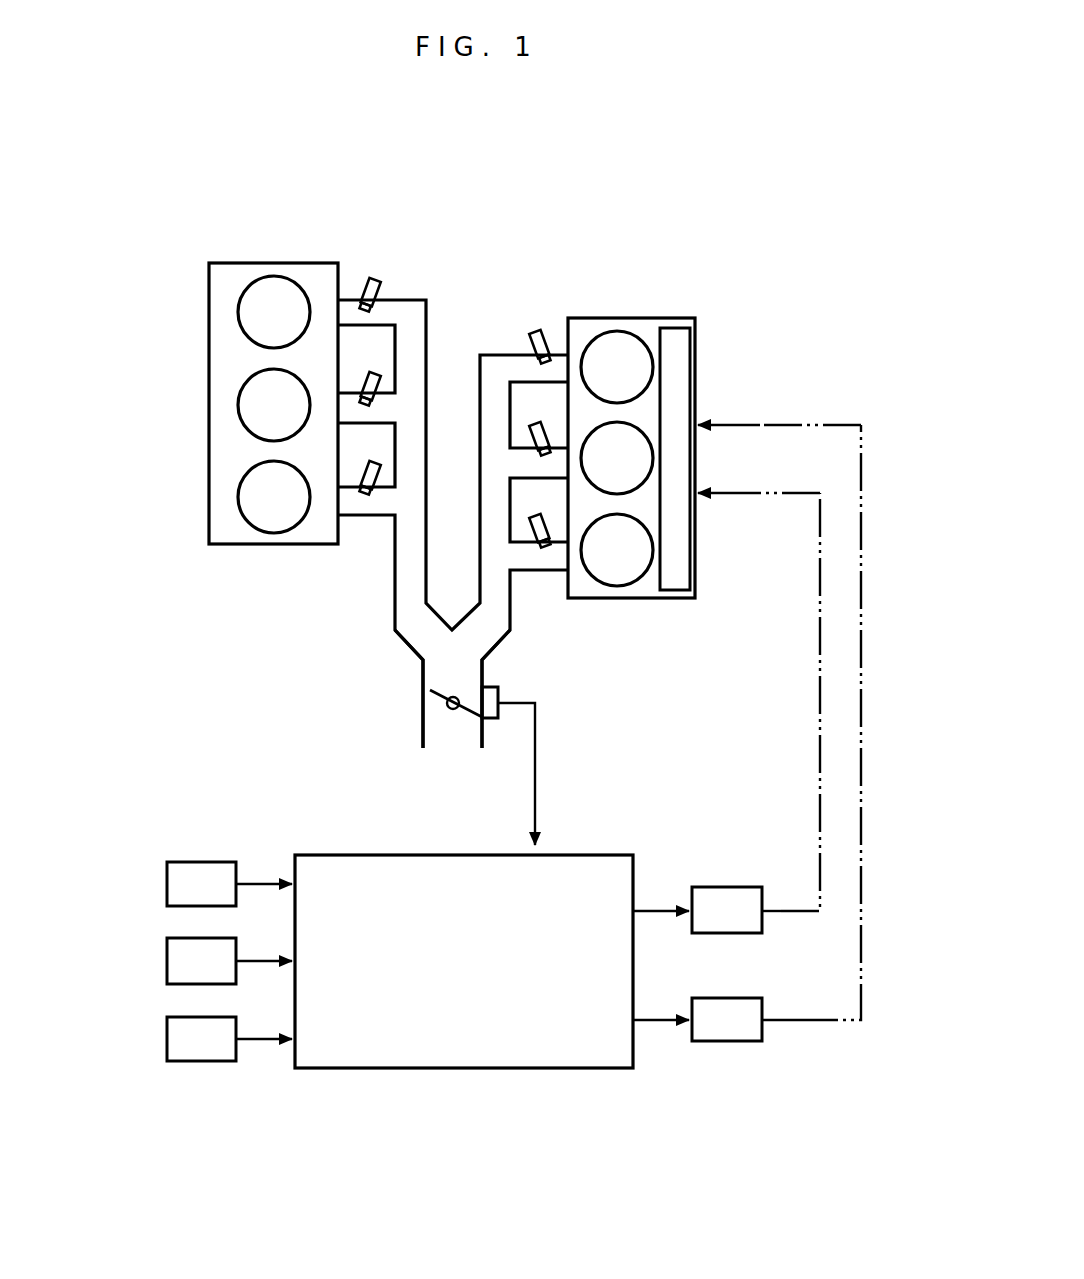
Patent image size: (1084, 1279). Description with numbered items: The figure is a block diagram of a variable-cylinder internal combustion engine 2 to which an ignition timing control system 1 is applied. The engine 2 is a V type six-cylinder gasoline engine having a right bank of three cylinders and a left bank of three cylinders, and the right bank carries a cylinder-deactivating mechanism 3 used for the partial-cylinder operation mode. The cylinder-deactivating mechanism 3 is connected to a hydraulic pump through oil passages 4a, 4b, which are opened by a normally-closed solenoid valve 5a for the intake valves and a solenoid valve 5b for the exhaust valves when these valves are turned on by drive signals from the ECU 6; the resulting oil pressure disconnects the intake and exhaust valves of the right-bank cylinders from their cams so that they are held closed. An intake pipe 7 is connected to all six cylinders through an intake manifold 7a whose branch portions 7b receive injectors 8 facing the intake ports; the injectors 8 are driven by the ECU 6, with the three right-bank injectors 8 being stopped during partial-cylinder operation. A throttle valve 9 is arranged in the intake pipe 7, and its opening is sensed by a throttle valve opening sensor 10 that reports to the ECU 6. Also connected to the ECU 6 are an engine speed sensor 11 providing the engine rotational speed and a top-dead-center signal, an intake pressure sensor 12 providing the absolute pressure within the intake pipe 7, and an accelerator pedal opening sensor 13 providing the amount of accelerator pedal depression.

The ignition timing control system 1 is at (380, 1092).
The variable-cylinder internal combustion engine 2 is at (262, 263).
The cylinder-deactivating mechanism 3 is at (680, 352).
The oil passage 4a is at (820, 612).
The oil passage 4b is at (861, 612).
The solenoid valve for intake valves 5a is at (727, 887).
The solenoid valve for exhaust valves 5b is at (722, 1041).
The ECU 6 is at (535, 1068).
The intake pipe 7 is at (423, 667).
The intake manifold 7a is at (480, 404).
The branch portions 7b is at (416, 300).
The injectors 8 is at (376, 282).
The throttle valve 9 is at (432, 692).
The throttle valve opening sensor 10 is at (496, 720).
The engine speed sensor 11 is at (167, 882).
The intake pressure sensor 12 is at (167, 960).
The accelerator pedal opening sensor 13 is at (167, 1038).